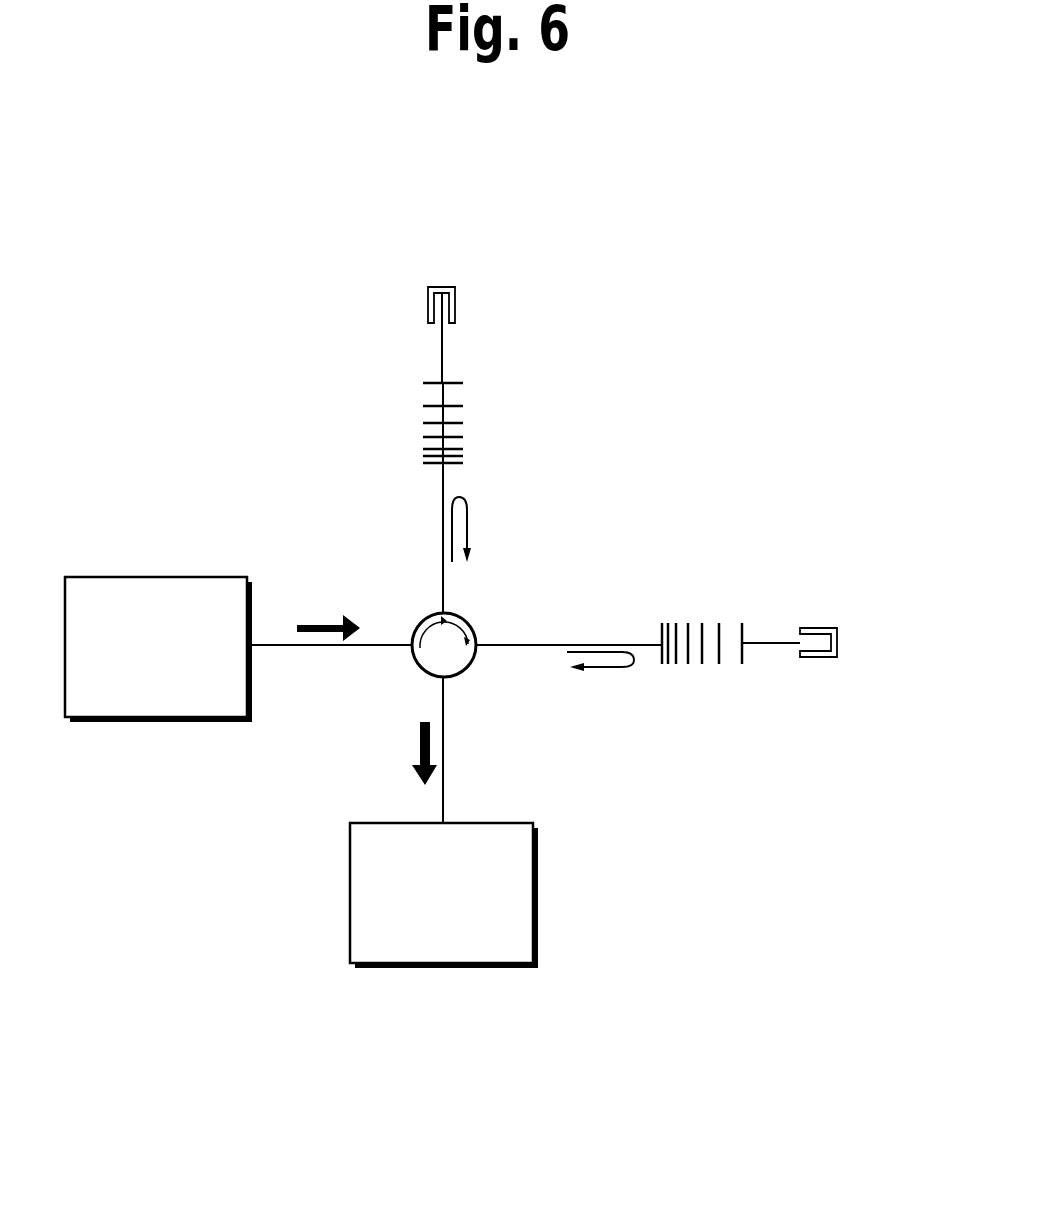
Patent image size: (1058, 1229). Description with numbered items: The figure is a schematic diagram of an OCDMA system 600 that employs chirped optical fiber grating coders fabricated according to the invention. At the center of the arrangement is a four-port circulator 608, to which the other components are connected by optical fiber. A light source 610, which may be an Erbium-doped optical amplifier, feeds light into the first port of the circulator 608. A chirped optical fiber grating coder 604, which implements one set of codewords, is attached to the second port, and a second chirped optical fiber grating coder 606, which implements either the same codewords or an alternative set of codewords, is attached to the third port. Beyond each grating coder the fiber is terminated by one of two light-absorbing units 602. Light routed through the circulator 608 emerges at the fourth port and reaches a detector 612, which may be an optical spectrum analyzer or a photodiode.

The OCDMA system 600 is at (182, 249).
The light-absorbing unit 602 is at (458, 303).
The chirped optical fiber grating coder 604 is at (466, 423).
The chirped optical fiber grating coder 606 is at (703, 618).
The 4-port circulator 608 is at (476, 628).
The light source 610 is at (155, 722).
The detector 612 is at (440, 968).